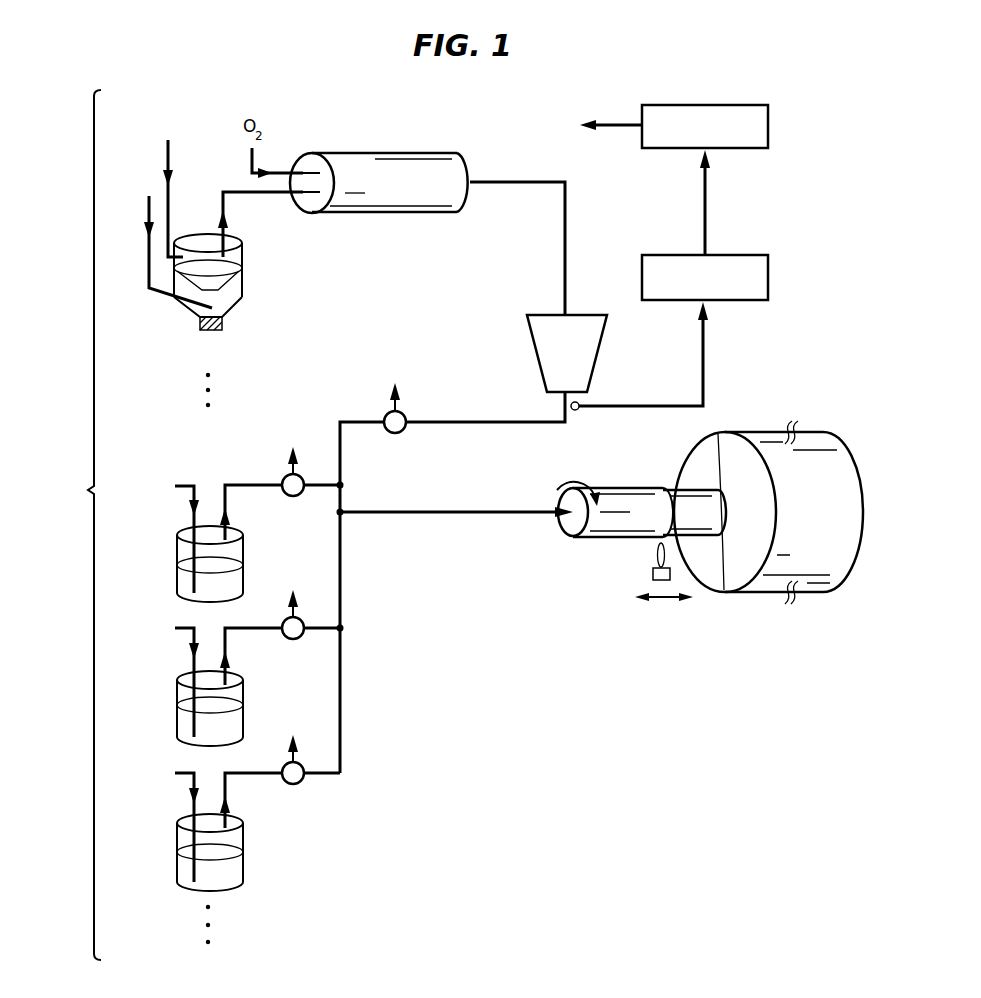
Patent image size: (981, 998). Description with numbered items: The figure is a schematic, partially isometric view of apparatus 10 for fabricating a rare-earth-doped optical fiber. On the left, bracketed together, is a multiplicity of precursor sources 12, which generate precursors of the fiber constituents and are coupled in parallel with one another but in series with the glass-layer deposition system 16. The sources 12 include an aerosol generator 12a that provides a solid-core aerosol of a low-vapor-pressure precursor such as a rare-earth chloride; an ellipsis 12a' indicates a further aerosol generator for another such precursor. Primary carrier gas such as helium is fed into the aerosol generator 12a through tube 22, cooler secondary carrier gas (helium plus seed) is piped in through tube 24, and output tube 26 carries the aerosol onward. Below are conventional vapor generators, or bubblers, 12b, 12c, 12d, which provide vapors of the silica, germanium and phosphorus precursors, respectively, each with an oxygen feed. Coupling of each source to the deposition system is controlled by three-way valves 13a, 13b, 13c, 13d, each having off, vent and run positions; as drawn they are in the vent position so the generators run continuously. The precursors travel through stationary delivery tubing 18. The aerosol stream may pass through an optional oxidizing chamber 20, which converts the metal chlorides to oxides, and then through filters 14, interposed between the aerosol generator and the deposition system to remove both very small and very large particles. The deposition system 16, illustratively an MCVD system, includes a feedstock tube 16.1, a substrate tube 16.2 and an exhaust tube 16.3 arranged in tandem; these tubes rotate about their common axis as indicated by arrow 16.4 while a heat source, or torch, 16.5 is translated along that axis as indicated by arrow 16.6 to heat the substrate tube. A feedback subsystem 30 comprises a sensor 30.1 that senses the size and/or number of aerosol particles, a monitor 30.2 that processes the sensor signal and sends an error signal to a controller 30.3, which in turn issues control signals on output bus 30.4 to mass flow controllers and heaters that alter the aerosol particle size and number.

The apparatus 10 is at (413, 314).
The precursor sources 12 is at (81, 525).
The aerosol generator 12a is at (205, 282).
The separate aerosol generator 12a' is at (262, 374).
The vapor generator 12b is at (245, 556).
The vapor generator 12c is at (245, 701).
The vapor generator 12d is at (245, 844).
The three-way valve 13a is at (387, 414).
The three-way valve 13b is at (284, 478).
The three-way valve 13c is at (284, 621).
The three-way valve 13d is at (284, 766).
The filters 14 is at (529, 341).
The glass-layer deposition system 16 is at (687, 506).
The feedstock tube 16.1 is at (600, 539).
The substrate tube 16.2 is at (672, 490).
The exhaust tube 16.3 is at (808, 589).
The rotation arrow 16.4 is at (563, 483).
The heat source 16.5 is at (653, 575).
The translation arrow 16.6 is at (663, 600).
The delivery tubing 18 is at (563, 239).
The oxidizing chamber 20 is at (391, 159).
The tube 22 is at (146, 231).
The tube 24 is at (173, 177).
The output tube 26 is at (253, 194).
The feedback subsystem 30 is at (770, 212).
The sensor 30.1 is at (578, 410).
The monitor 30.2 is at (768, 279).
The controller 30.3 is at (768, 125).
The output bus 30.4 is at (612, 130).